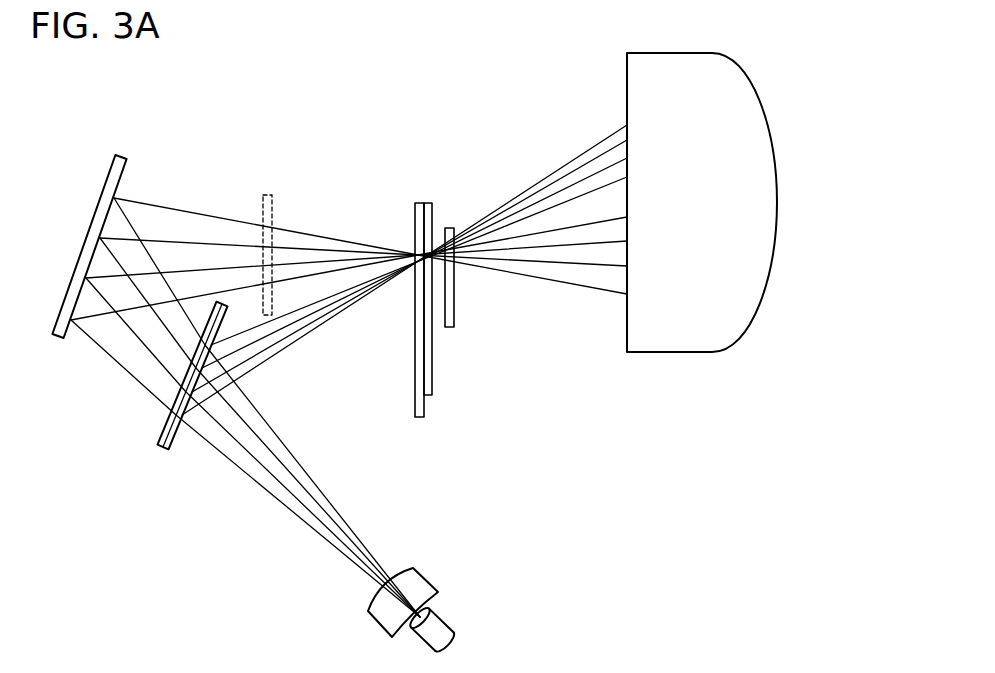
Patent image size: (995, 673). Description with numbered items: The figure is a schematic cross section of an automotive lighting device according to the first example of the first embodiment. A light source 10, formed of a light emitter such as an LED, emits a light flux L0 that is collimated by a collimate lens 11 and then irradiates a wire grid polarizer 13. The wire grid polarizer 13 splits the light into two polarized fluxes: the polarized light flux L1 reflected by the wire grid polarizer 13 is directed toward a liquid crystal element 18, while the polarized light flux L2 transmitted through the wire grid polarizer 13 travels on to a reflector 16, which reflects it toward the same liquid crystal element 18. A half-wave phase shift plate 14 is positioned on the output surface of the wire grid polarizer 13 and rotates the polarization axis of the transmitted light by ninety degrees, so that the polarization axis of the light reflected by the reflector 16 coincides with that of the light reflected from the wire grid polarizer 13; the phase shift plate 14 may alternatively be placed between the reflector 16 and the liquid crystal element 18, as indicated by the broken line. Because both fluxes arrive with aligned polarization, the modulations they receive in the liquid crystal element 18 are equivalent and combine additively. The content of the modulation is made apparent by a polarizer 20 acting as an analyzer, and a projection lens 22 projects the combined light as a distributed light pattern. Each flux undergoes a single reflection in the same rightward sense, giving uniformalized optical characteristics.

The light source 10 is at (447, 622).
The collimate lens 11 is at (428, 570).
The wire grid polarizer 13 is at (163, 447).
The (λ/2) phase shift plate 14 is at (275, 212).
The reflector 16 is at (118, 155).
The liquid crystal element 18 is at (427, 186).
The polarizer (analyzer) 20 is at (455, 318).
The projection lens 22 is at (757, 92).
The light beam from source L0 is at (282, 455).
The polarized light flux reflected by the wire grid polarizer L1 is at (277, 333).
The polarized light flux transmitted through the wire grid polarizer L2 is at (167, 322).